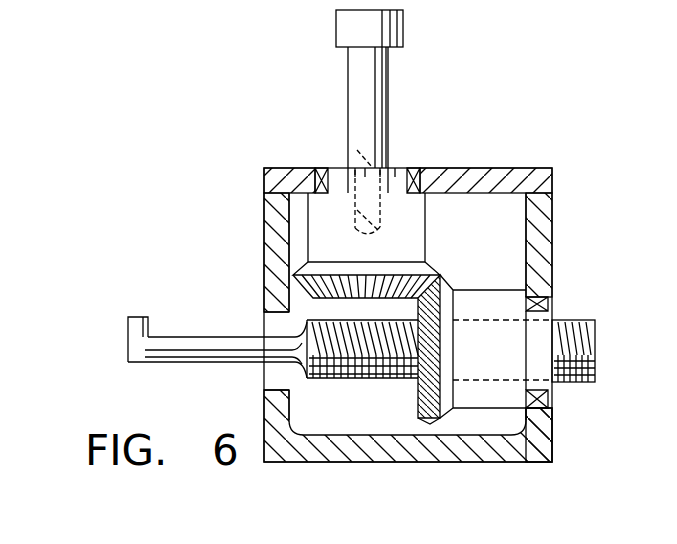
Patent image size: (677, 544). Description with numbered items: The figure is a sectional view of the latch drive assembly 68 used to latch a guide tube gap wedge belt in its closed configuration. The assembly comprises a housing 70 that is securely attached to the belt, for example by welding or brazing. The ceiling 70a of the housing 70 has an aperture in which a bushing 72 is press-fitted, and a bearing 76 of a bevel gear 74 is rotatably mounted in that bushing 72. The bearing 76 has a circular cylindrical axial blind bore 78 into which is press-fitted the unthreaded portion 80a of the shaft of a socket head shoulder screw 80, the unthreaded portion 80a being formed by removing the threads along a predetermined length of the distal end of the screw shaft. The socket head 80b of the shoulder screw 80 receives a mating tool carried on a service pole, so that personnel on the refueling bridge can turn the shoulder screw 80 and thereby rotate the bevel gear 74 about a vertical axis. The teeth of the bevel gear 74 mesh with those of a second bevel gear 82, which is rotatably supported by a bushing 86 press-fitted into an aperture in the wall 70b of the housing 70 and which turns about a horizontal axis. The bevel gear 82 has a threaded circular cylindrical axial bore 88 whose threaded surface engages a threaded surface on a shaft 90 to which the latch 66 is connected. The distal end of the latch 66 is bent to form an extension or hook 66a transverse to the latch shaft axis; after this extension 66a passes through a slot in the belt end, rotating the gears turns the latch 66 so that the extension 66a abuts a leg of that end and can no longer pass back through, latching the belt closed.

The latch 66 is at (205, 337).
The extension or hook 66a is at (137, 325).
The latch drive assembly 68 is at (514, 141).
The housing 70 is at (405, 296).
The ceiling 70a is at (283, 167).
The wall 70b is at (552, 247).
The bushing 72 is at (409, 167).
The bevel gear 74 is at (438, 266).
The bearing 76 is at (393, 167).
The circular cylindrical axial blind bore 78 is at (384, 237).
The socket head shoulder screw 80 is at (348, 68).
The unthreaded portion 80a is at (352, 146).
The socket head 80b is at (345, 25).
The bevel gear 82 is at (428, 412).
The bushing 86 is at (548, 303).
The threaded circular cylindrical axial bore 88 is at (463, 380).
The shaft 90 is at (585, 383).